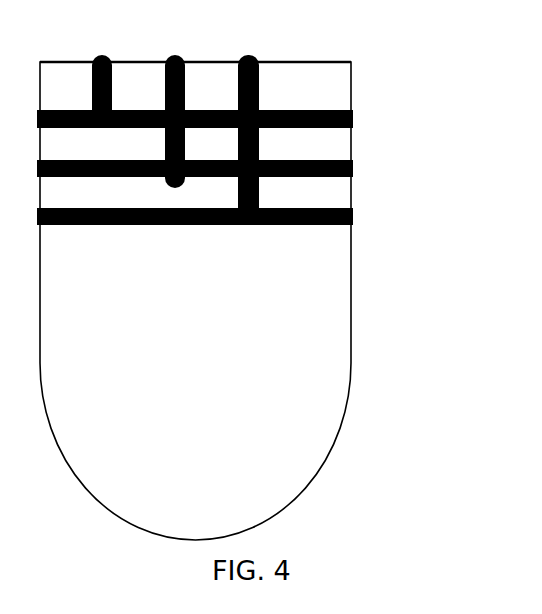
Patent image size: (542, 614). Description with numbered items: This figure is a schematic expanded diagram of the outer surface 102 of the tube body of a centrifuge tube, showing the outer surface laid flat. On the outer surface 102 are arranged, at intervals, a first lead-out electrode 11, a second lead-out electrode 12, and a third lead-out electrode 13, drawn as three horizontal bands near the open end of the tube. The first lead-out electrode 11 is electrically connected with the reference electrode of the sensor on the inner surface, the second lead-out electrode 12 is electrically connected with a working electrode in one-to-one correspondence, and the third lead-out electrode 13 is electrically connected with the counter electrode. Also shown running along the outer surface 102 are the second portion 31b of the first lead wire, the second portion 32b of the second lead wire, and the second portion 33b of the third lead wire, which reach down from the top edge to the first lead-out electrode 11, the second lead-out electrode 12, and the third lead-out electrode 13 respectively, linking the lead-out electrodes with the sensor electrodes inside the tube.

The outer surface 102 is at (315, 93).
The first lead-out electrode 11 is at (345, 118).
The second lead-out electrode 12 is at (345, 167).
The third lead-out electrode 13 is at (352, 213).
The second portion of the first lead wire 31b is at (101, 61).
The second portion of the second lead wire 32b is at (174, 61).
The second portion of the third lead wire 33b is at (243, 60).